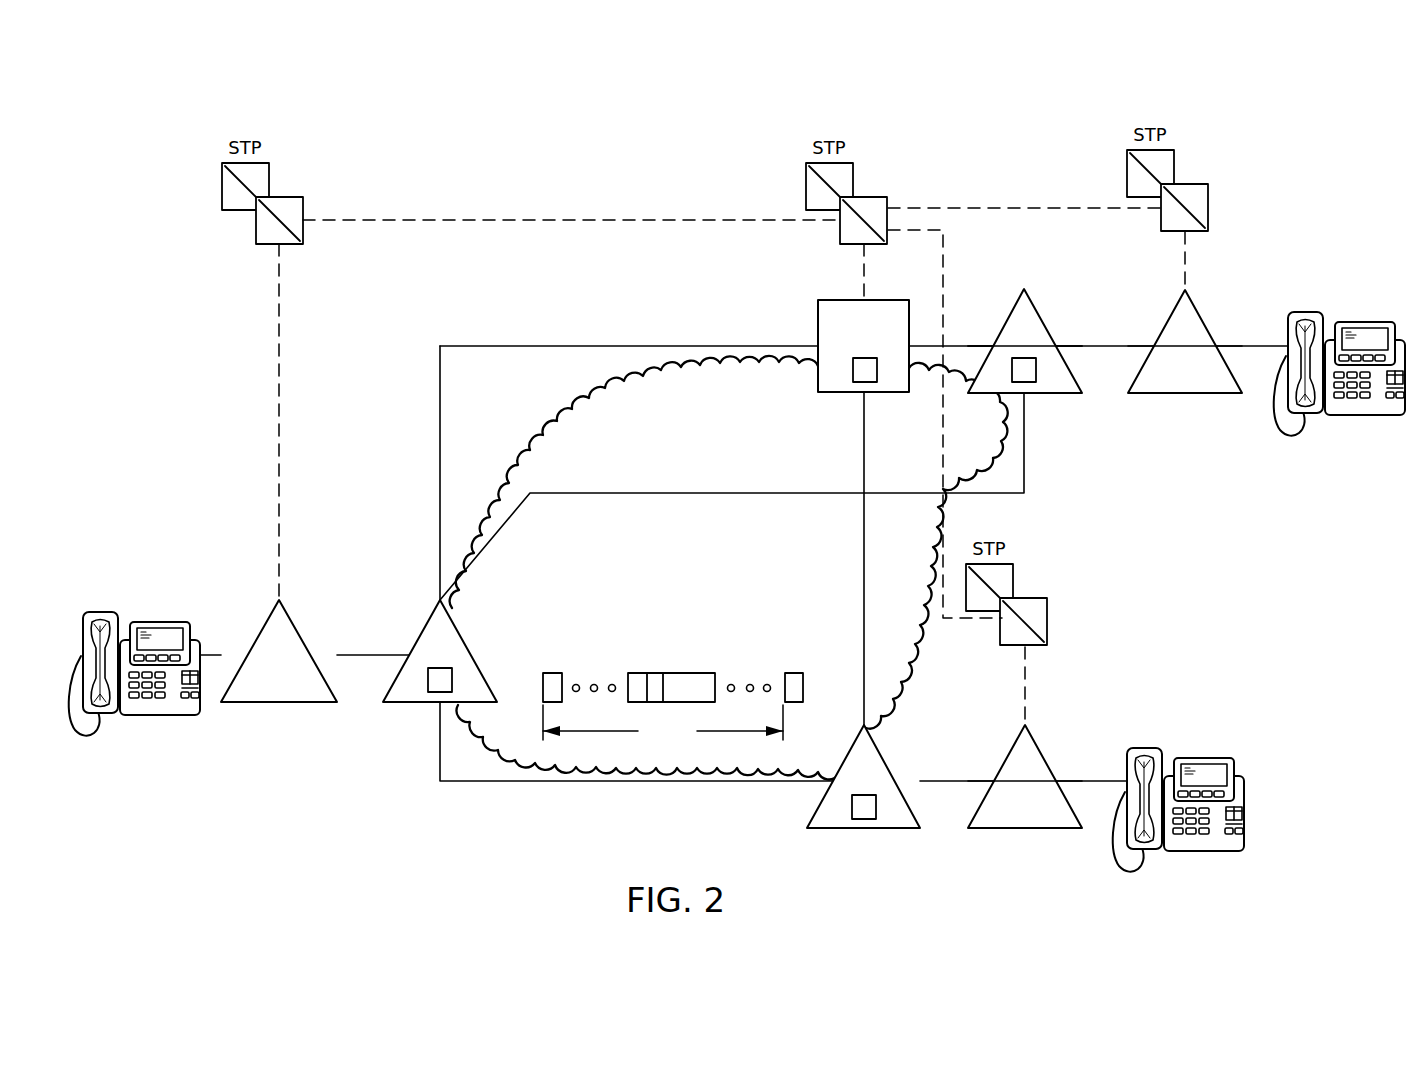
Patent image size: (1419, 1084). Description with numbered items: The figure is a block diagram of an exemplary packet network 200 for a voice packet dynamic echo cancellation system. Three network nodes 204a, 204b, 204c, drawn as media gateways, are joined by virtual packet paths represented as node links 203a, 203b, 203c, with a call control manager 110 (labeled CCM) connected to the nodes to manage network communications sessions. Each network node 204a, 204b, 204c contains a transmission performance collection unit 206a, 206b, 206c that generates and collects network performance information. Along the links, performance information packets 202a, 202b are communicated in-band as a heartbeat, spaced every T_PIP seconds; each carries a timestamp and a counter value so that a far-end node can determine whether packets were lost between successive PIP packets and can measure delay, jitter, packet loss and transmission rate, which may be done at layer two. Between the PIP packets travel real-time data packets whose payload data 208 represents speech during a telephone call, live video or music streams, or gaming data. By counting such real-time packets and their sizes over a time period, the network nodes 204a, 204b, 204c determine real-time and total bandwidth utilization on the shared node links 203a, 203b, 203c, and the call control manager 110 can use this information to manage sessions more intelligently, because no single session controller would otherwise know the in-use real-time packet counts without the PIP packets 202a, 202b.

The packet network 200 is at (1281, 149).
The call control manager (CCM) 110 is at (818, 326).
The performance information packet 202a is at (553, 673).
The performance information packet 202b is at (795, 673).
The node link 203a is at (726, 493).
The node link 203b is at (636, 781).
The node link 203c is at (864, 551).
The network node 204a is at (422, 670).
The network node 204b is at (1046, 356).
The network node 204c is at (884, 796).
The transmission performance collection unit 206a is at (427, 693).
The transmission performance collection unit 206b is at (1037, 382).
The transmission performance collection unit 206c is at (878, 815).
The payload data 208 is at (675, 673).